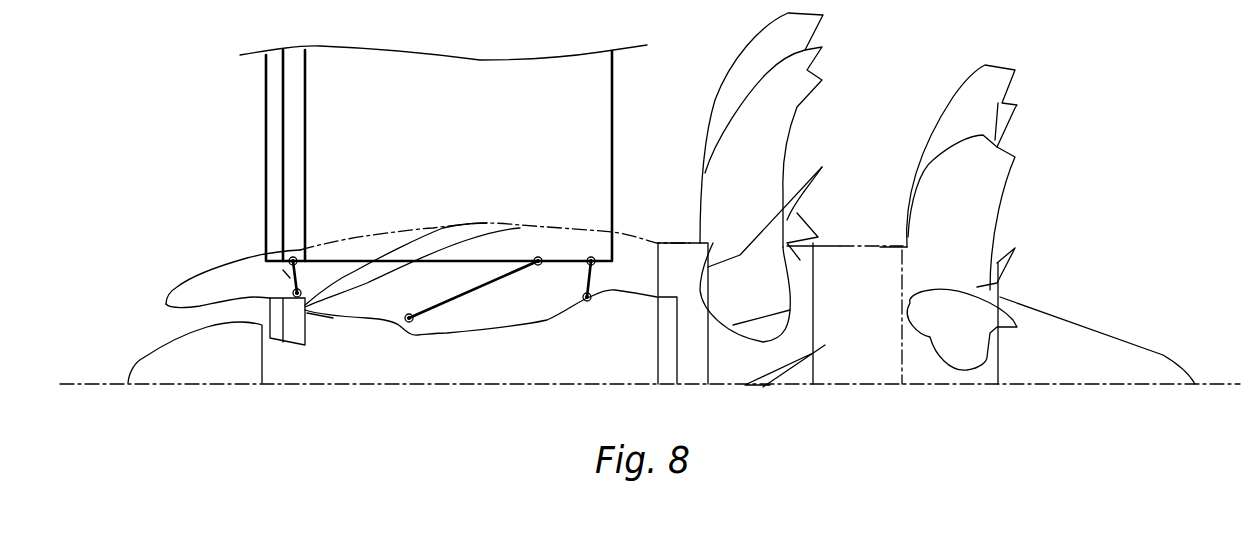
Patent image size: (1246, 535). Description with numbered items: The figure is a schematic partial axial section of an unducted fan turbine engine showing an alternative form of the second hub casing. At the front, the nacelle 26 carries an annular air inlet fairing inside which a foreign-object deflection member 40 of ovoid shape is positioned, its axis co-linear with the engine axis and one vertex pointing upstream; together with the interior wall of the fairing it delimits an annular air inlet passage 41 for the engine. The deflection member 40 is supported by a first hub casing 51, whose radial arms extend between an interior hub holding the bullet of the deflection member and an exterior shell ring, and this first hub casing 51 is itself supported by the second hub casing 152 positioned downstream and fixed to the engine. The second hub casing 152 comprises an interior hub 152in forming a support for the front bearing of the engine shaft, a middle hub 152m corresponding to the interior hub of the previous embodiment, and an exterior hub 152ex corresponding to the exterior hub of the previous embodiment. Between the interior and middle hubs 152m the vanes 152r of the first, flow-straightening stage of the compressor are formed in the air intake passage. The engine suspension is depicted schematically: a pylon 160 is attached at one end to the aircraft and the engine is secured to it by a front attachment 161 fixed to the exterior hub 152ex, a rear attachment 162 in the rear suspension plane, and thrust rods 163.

The pylon 160 is at (583, 100).
The second hub casing 152 is at (317, 291).
The exterior hub 152ex is at (306, 288).
The interior hub 152in is at (307, 320).
The vanes 152r is at (308, 313).
The middle hub 152m is at (313, 307).
The front attachment 161 is at (288, 277).
The first hub casing 51 is at (272, 299).
The air inlet passage 41 is at (197, 315).
The foreign-object deflection member 40 is at (167, 360).
The nacelle 26 is at (517, 243).
The thrust rods 163 is at (480, 290).
The rear attachment 162 is at (600, 284).